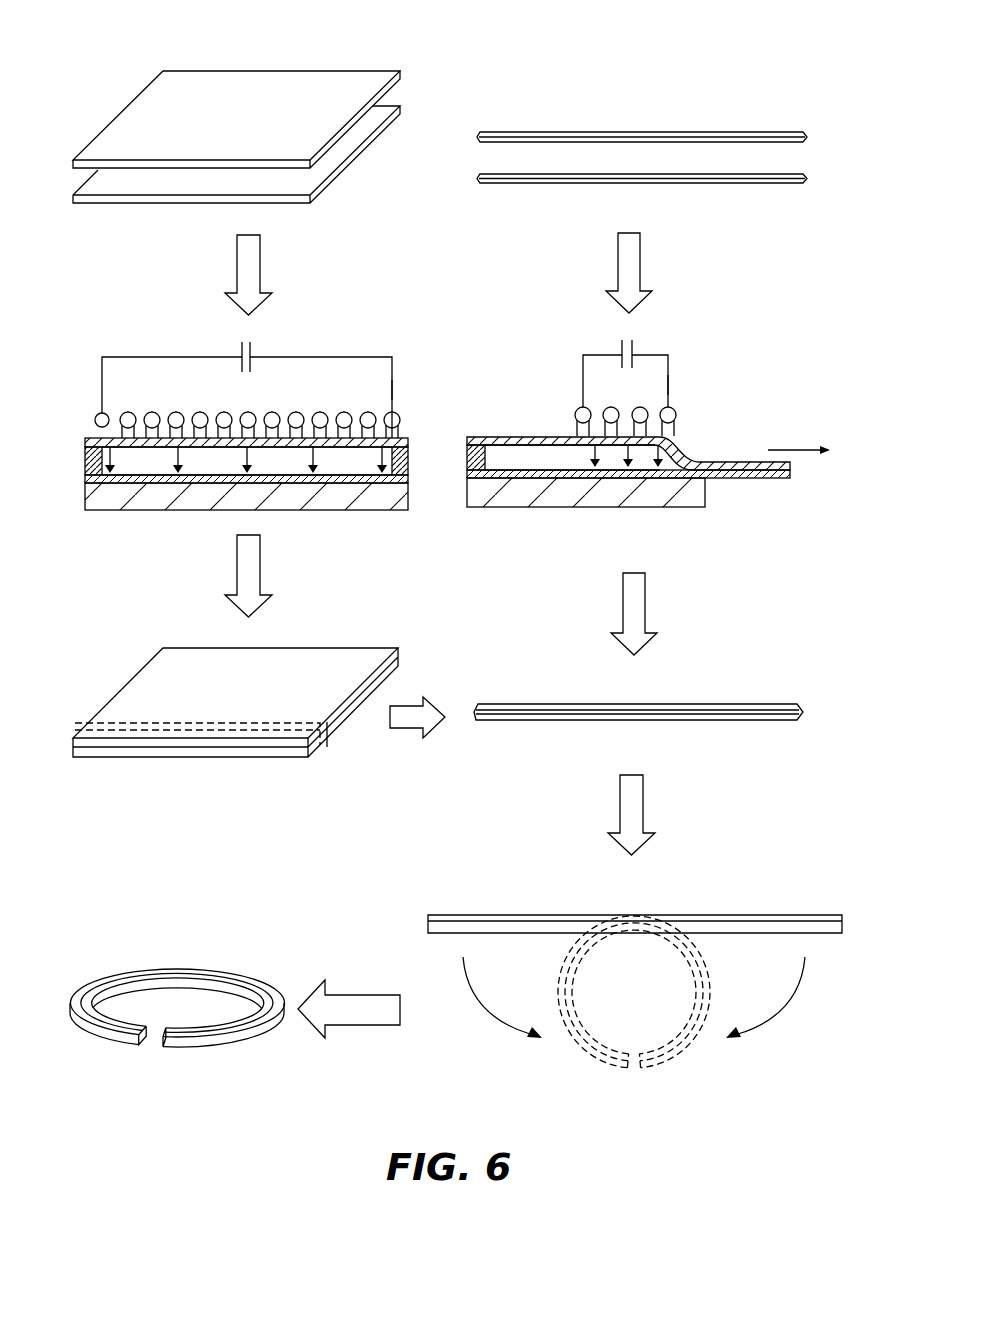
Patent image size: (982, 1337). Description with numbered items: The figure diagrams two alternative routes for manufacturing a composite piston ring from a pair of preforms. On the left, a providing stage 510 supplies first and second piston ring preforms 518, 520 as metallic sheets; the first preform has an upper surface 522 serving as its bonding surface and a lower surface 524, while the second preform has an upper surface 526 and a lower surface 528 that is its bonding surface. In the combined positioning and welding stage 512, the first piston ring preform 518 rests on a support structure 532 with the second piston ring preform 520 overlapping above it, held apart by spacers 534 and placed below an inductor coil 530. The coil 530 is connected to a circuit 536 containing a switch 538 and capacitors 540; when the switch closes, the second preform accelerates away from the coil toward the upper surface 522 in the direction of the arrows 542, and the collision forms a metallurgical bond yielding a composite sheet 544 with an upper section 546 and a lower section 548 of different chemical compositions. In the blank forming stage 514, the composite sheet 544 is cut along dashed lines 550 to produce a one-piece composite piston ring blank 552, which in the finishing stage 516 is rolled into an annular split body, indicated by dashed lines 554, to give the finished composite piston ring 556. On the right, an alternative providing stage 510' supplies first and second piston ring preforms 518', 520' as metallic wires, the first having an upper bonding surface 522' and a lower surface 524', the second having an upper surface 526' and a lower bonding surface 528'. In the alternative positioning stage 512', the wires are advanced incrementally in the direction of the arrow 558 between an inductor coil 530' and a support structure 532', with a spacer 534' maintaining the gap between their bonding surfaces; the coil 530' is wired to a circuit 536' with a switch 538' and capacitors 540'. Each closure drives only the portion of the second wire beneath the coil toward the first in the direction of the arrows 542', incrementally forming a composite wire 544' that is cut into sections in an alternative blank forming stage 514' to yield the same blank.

The providing stage 510 is at (230, 129).
The alternative providing stage 510' is at (647, 131).
The positioning stage and welding stage 512 is at (226, 404).
The alternative positioning stage 512' is at (648, 389).
The blank forming stage 514 is at (221, 703).
The alternative blank forming stage 514' is at (647, 665).
The finishing stage 516 is at (753, 890).
The first piston ring preform 518 is at (225, 307).
The first piston ring preform 518' is at (638, 346).
The second piston ring preform 520 is at (229, 259).
The second piston ring preform 520' is at (646, 283).
The upper surface 522 is at (143, 366).
The upper surface 522' is at (556, 346).
The lower surface 524 is at (319, 224).
The lower surface 524' is at (539, 202).
The upper surface 526 is at (303, 64).
The upper surface 526' is at (640, 114).
The lower surface 528 is at (426, 63).
The lower surface 528' is at (698, 155).
The inductor coil 530 is at (260, 405).
The inductor coil 530' is at (597, 408).
The support structure 532 is at (246, 517).
The support structure 532' is at (586, 511).
The spacer 534 is at (247, 442).
The spacer 534' is at (453, 467).
The circuit 536 is at (243, 379).
The circuit 536' is at (607, 361).
The switch 538 is at (414, 372).
The switch 538' is at (705, 381).
The capacitor 540 is at (279, 346).
The capacitor 540' is at (658, 342).
The arrows 542 is at (247, 461).
The arrows 542' is at (608, 440).
The composite sheet 544 is at (235, 686).
The composite wire 544' is at (748, 488).
The upper section 546 is at (73, 739).
The lower section 548 is at (72, 757).
The dashed lines 550 is at (232, 722).
The composite piston ring blank 552 is at (683, 703).
The upper section 554 is at (803, 708).
The finished composite piston ring 556 is at (800, 719).
The arrow 558 is at (782, 444).